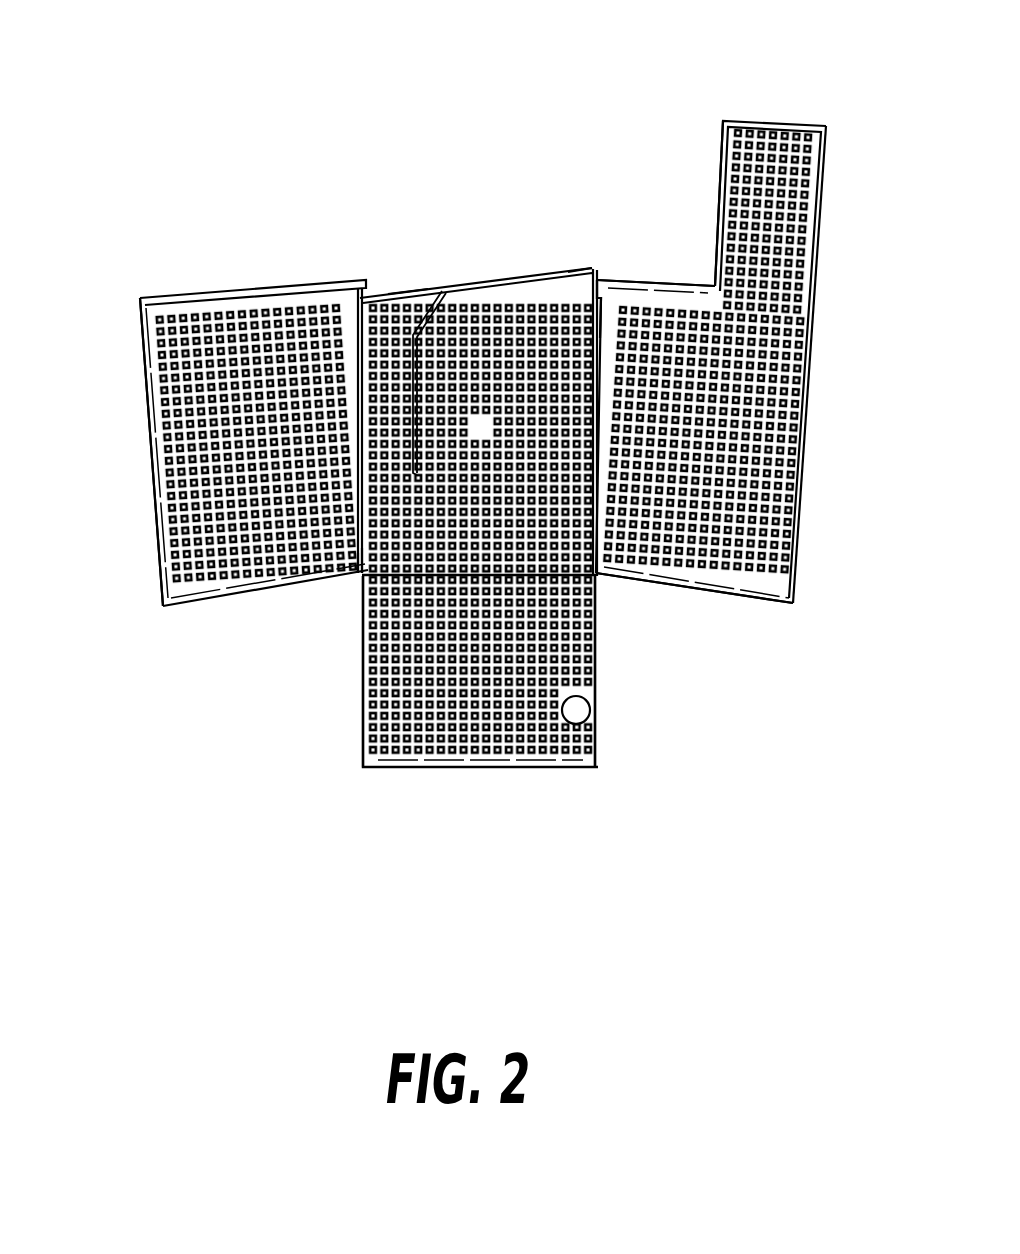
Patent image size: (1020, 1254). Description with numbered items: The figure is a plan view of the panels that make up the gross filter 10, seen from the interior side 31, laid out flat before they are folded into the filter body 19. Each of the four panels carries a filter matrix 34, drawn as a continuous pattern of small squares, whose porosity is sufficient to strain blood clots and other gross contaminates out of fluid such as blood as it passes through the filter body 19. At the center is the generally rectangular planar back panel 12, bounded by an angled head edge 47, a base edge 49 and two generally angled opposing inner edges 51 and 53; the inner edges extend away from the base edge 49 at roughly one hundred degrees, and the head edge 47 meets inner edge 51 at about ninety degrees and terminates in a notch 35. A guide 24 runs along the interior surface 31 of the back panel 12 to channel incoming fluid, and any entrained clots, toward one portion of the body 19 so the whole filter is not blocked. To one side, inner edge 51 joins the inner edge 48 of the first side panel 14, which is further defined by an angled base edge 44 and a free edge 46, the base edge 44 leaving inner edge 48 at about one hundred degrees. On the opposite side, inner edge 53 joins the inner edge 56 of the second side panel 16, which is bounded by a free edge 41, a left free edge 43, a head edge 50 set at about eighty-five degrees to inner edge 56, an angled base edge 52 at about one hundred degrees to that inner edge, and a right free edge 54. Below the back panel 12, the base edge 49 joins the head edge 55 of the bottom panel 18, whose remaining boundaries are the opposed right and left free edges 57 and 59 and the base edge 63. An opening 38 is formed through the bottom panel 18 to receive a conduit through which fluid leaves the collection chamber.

The gross filter 10 is at (388, 243).
The back panel 12 is at (575, 562).
The first side panel 14 is at (227, 507).
The second side panel 16 is at (753, 557).
The bottom panel 18 is at (400, 718).
The filter body 19 is at (328, 755).
The guide 24 is at (400, 292).
The interior side 31 is at (232, 333).
The filter matrix 34 is at (182, 520).
The notch 35 is at (590, 262).
The opening 38 is at (568, 702).
The free edge 41 is at (760, 112).
The left free edge 43 is at (712, 165).
The base edge 44 is at (201, 597).
The free edge 46 is at (143, 440).
The head edge 47 is at (423, 284).
The inner edge 48 is at (360, 538).
The base edge 49 is at (355, 560).
The head edge 50 is at (672, 273).
The inner edge 51 is at (350, 362).
The base edge 52 is at (740, 594).
The inner edge 53 is at (597, 300).
The right free edge 54 is at (800, 395).
The head edge 55 is at (535, 565).
The inner edge 56 is at (537, 530).
The right free edge 57 is at (588, 742).
The left free edge 59 is at (357, 657).
The base edge 63 is at (469, 760).